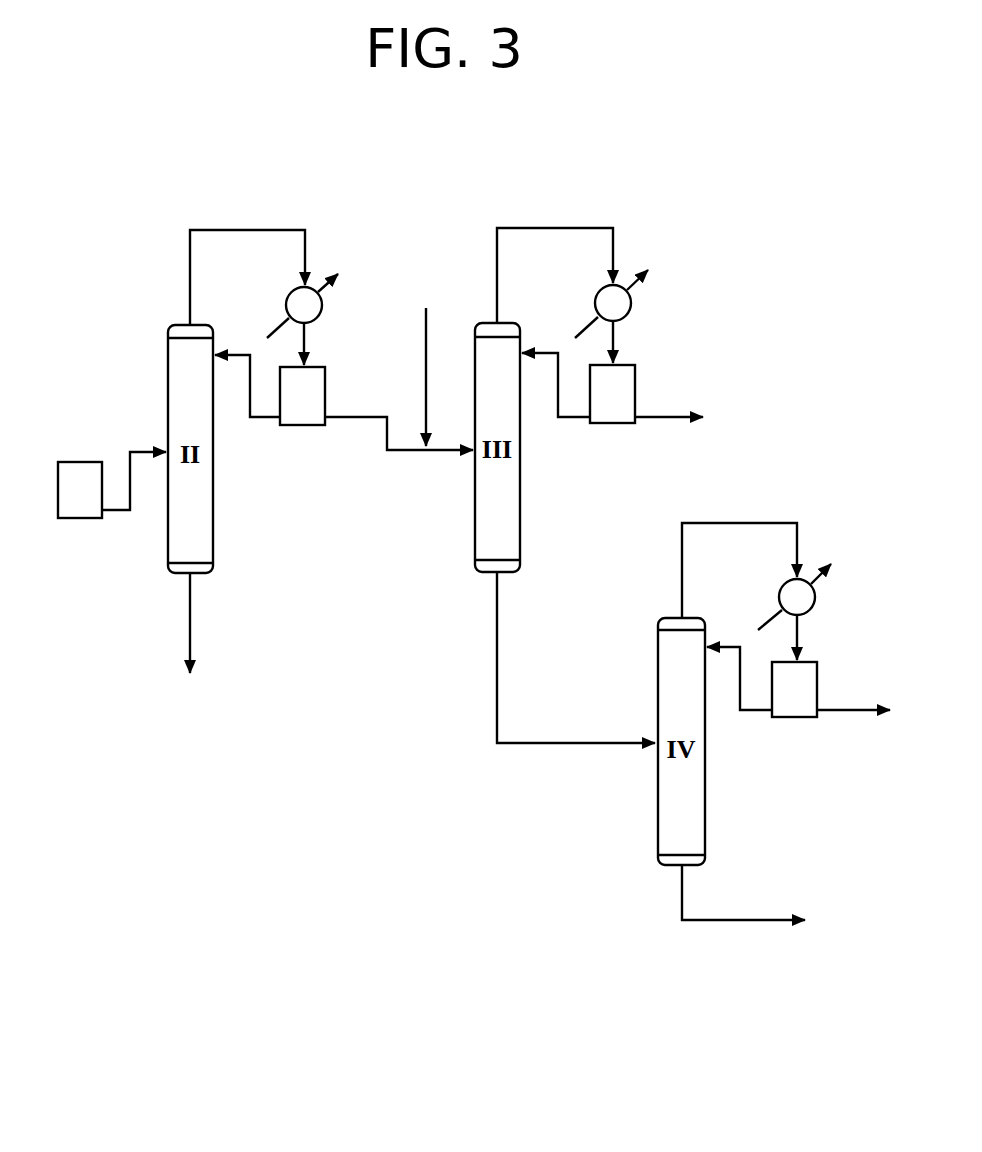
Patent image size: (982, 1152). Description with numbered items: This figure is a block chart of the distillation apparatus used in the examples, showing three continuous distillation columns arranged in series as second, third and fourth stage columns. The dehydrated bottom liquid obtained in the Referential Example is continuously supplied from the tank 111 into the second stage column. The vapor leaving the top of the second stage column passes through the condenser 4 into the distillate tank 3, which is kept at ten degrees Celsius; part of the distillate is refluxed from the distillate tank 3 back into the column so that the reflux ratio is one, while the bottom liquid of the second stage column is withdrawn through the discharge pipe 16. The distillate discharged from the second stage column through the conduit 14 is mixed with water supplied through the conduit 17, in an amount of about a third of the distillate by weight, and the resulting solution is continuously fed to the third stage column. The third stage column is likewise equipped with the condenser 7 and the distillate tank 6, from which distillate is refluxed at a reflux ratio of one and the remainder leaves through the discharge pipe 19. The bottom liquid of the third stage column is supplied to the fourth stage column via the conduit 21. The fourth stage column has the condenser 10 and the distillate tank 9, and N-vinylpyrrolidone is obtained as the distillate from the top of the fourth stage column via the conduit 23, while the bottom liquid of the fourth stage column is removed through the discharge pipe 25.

The tank 111 is at (112, 485).
The distillate tank 3 is at (302, 396).
The condenser 4 is at (302, 319).
The distillate tank 6 is at (612, 394).
The condenser 7 is at (611, 316).
The distillate tank 9 is at (794, 689).
The condenser 10 is at (794, 612).
The conduit 14 is at (357, 419).
The discharge pipe 16 is at (188, 622).
The conduit 17 is at (424, 334).
The discharge pipe 19 is at (666, 419).
The conduit 21 is at (537, 745).
The conduit 23 is at (848, 712).
The discharge pipe 25 is at (732, 922).